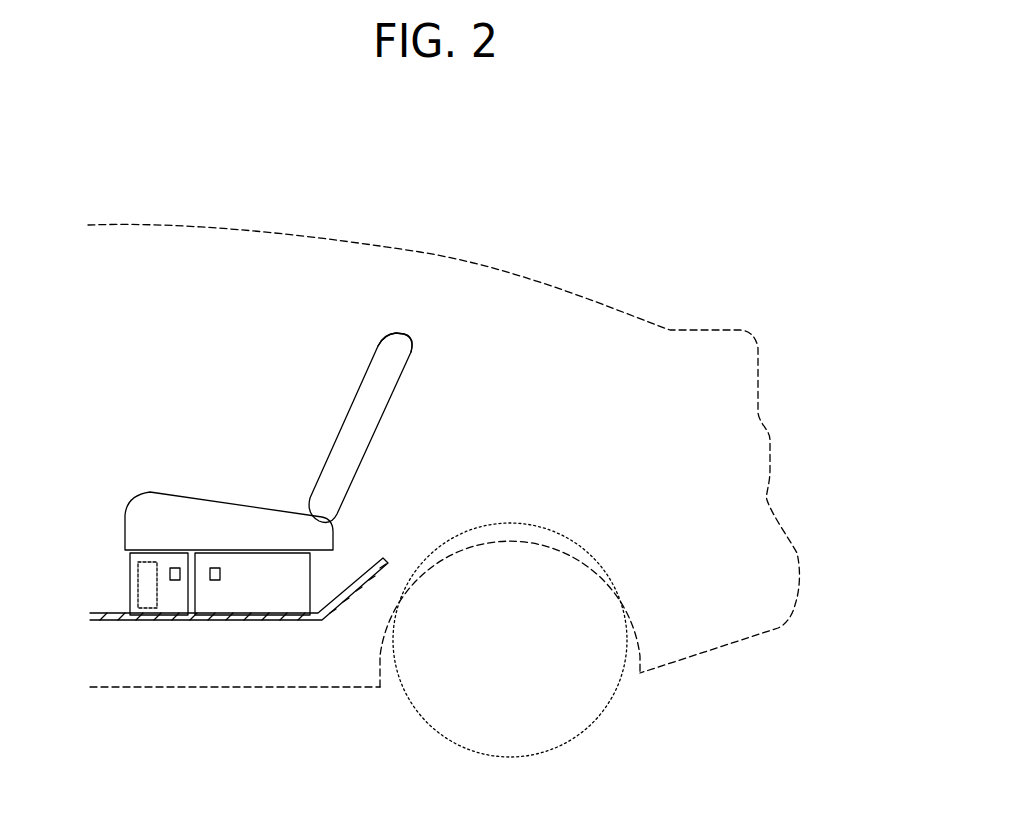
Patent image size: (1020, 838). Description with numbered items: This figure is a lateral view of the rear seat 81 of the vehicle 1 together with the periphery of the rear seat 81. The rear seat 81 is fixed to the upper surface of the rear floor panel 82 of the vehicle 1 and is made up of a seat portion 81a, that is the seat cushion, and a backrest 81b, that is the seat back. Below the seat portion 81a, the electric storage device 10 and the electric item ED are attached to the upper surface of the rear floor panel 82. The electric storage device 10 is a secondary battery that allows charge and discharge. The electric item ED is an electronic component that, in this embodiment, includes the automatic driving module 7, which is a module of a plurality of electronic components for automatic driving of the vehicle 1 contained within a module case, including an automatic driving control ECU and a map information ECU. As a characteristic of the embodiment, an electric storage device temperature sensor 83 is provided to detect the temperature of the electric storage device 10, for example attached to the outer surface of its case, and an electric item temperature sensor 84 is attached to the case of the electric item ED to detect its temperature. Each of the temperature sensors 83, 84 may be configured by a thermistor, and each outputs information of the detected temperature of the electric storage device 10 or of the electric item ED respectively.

The vehicle 1 is at (417, 235).
The automatic driving module 7 is at (128, 580).
The electric storage device 10 is at (262, 593).
The rear seat 81 is at (332, 419).
The seat portion 81a is at (182, 500).
The backrest 81b is at (363, 362).
The rear floor panel 82 is at (298, 622).
The electric storage device temperature sensor 83 is at (214, 582).
The electric item temperature sensor 84 is at (176, 582).
The electric item ED is at (132, 595).